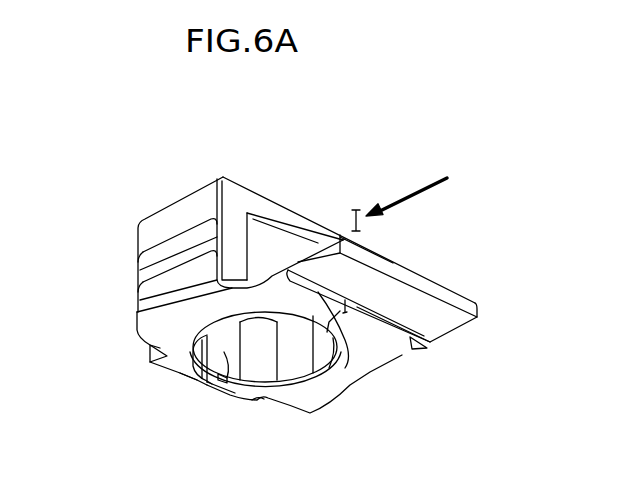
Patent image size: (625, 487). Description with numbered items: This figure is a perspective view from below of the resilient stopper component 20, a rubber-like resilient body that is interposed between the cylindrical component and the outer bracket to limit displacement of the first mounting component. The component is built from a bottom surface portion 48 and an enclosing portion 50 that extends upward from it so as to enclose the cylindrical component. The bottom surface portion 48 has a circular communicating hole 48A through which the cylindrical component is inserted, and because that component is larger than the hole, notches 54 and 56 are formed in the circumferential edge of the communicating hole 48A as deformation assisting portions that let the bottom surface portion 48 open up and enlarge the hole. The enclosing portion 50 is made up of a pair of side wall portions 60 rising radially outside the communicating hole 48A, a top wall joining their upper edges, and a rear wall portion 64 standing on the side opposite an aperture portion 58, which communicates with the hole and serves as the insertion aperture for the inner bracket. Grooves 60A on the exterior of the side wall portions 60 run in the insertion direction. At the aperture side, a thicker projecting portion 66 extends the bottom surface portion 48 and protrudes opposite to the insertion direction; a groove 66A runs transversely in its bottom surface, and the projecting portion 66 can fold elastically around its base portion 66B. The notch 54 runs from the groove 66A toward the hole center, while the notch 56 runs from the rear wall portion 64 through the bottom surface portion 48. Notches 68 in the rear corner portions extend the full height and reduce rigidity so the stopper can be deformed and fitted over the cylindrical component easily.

The resilient stopper component 20 is at (392, 162).
The bottom surface portion 48 is at (311, 414).
The communicating hole 48A is at (343, 314).
The enclosing portion 50 is at (182, 190).
The notch 54 is at (398, 348).
The notch 56 is at (198, 380).
The aperture portion 58 is at (267, 243).
The side wall portions 60 is at (155, 220).
The grooves 60A is at (146, 302).
The rear wall portion 64 is at (226, 376).
The projecting portion 66 is at (462, 332).
The groove 66A is at (407, 332).
The base portion 66B is at (413, 345).
The notches 68 is at (145, 353).